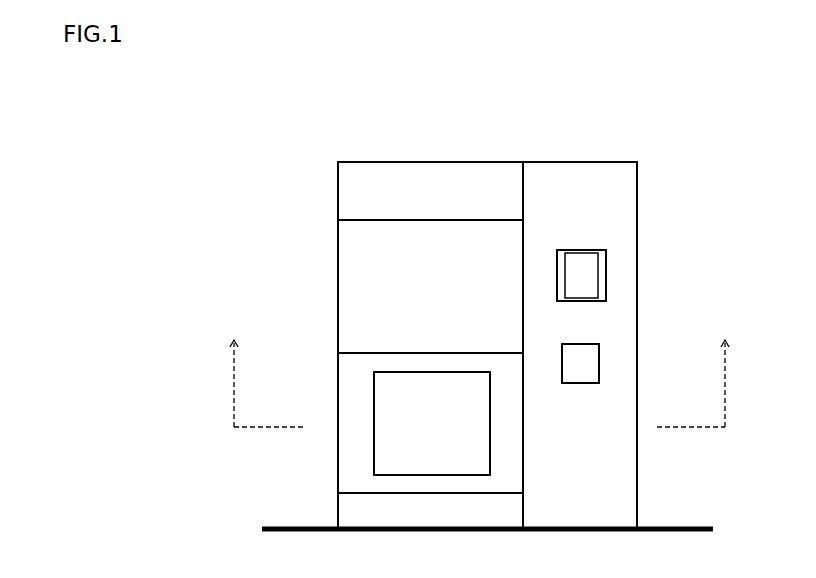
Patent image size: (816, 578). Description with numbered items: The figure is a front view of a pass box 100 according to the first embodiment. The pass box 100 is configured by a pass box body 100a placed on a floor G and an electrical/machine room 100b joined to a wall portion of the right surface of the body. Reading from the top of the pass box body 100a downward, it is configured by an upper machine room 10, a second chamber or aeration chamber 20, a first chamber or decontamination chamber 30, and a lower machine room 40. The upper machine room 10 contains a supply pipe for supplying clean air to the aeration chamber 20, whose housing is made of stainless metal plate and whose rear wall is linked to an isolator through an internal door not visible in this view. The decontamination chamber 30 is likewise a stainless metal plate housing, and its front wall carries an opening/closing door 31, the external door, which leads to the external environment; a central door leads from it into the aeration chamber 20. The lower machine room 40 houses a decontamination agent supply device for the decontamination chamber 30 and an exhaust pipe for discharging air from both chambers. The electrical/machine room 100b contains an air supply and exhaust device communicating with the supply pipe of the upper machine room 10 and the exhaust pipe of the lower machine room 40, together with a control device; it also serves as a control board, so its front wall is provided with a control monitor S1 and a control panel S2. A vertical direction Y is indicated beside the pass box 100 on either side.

The pass box 100 is at (462, 124).
The pass box body 100a is at (375, 160).
The electrical/machine room 100b is at (592, 160).
The upper machine room 10 is at (337, 197).
The second chamber (aeration chamber) 20 is at (337, 273).
The first chamber (decontamination chamber) 30 is at (337, 387).
The opening/closing door (external door) 31 is at (405, 439).
The lower machine room 40 is at (337, 513).
The control monitor S1 is at (606, 270).
The control panel S2 is at (599, 357).
The floor G is at (680, 525).
The Y direction Y is at (478, 372).